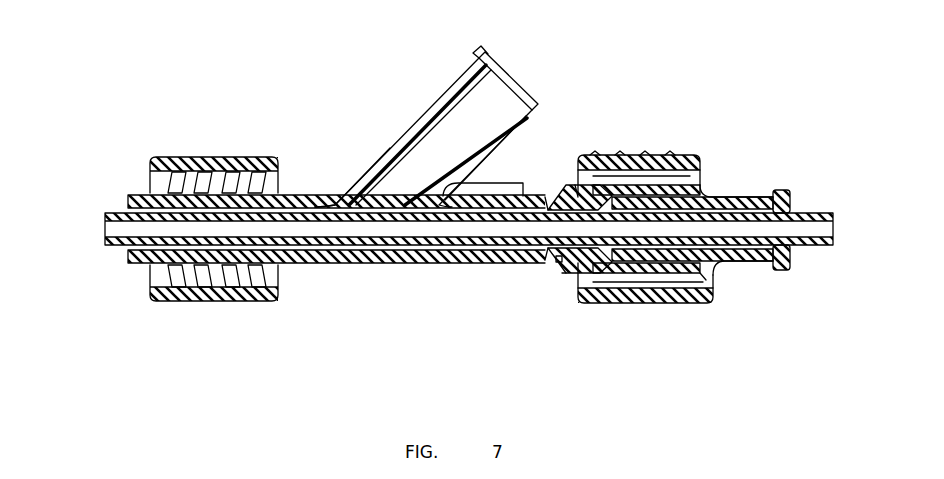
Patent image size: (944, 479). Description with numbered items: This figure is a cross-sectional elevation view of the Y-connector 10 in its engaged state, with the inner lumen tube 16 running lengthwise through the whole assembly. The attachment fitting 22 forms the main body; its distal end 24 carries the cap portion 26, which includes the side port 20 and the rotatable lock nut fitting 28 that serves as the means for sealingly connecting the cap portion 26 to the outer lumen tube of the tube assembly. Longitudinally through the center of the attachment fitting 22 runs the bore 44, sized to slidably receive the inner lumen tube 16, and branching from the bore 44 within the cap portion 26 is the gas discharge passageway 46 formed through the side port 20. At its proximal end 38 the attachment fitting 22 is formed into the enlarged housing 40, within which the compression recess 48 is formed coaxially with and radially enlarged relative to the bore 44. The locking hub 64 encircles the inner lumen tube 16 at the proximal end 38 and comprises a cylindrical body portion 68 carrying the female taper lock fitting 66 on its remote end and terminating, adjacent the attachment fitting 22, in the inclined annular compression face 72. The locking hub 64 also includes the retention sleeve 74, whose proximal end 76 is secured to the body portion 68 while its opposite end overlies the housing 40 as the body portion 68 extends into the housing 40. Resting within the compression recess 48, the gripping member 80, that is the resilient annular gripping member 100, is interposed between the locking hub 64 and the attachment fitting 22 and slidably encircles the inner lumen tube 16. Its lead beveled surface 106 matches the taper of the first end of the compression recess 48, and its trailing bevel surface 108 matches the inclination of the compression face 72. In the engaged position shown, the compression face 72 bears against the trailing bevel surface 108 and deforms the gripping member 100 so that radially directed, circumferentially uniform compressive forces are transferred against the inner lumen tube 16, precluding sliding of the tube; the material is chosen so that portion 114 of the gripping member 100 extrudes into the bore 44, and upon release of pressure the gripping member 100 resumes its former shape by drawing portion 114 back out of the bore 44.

The Y-connector 10 is at (446, 218).
The inner lumen tube 16 is at (116, 233).
The side port 20 is at (399, 126).
The attachment fitting 22 is at (351, 144).
The distal end 24 is at (296, 267).
The cap portion 26 is at (330, 230).
The rotatable lock nut fitting 28 is at (206, 146).
The proximal end 38 is at (483, 184).
The housing 40 is at (578, 186).
The bore 44 is at (538, 247).
The gas discharge passageway 46 is at (478, 134).
The compression recess 48 is at (580, 155).
The locking hub 64 is at (677, 182).
The female taper lock fitting 66 is at (792, 196).
The cylindrical body portion 68 is at (715, 185).
The annular compression face 72 is at (606, 278).
The retention sleeve 74 is at (697, 290).
The proximal end 76 is at (720, 284).
The gripping member 80 is at (634, 157).
The resilient annular gripping member 100 is at (575, 197).
The lead beveled surface 106 is at (562, 276).
The trailing bevel surface 108 is at (607, 155).
The extruded portion 114 is at (547, 204).